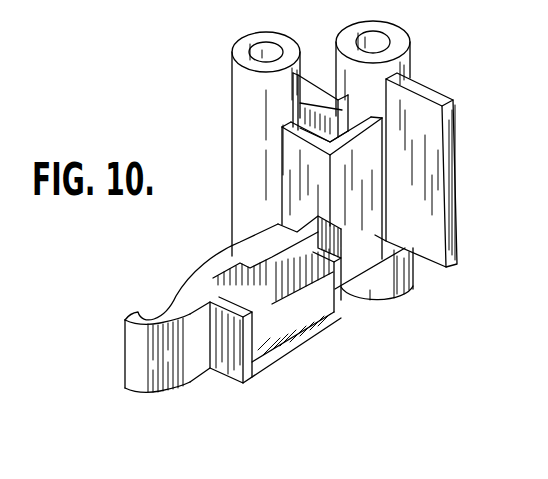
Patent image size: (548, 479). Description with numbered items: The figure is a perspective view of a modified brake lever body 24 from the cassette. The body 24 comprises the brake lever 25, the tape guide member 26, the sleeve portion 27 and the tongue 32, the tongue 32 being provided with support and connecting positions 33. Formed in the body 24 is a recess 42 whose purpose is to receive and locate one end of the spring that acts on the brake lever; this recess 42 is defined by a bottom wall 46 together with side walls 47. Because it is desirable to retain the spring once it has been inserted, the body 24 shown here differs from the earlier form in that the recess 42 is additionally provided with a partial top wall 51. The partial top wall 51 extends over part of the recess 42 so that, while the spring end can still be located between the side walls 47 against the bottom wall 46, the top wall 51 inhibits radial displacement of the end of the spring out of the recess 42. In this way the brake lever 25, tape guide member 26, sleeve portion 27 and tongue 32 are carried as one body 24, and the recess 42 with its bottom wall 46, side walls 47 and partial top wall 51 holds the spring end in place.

The body 24 is at (263, 270).
The brake lever 25 is at (147, 384).
The tape guide member 26 is at (231, 54).
The sleeve portion 27 is at (404, 46).
The tongue 32 is at (423, 118).
The support and connecting positions 33 is at (338, 132).
The recess 42 is at (278, 330).
The bottom wall 46 is at (308, 320).
The side walls 47 is at (245, 350).
The partial top wall 51 is at (268, 258).